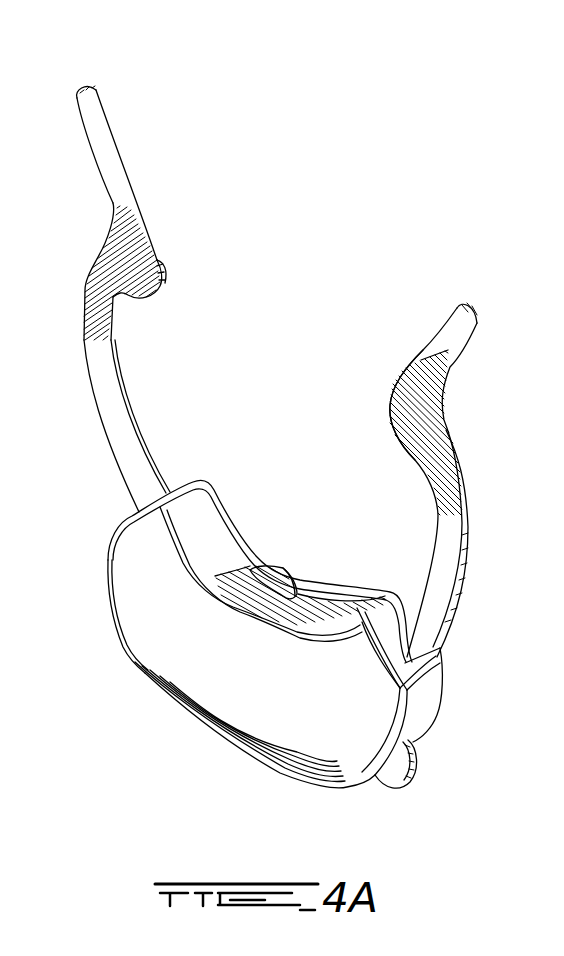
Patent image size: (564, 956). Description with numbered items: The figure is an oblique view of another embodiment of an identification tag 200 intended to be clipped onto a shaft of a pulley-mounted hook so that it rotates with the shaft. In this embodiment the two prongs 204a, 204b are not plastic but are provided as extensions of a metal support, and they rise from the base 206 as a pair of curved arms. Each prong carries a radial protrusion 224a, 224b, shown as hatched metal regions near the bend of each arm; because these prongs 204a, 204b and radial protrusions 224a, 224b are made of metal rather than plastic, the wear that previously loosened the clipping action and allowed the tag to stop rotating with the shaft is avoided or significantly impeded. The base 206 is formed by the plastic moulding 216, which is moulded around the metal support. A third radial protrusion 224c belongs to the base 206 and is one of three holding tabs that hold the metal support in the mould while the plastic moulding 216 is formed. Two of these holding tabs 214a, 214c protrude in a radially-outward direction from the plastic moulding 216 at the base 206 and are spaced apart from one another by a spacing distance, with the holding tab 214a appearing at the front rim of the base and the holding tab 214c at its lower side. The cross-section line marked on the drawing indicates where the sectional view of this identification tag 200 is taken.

The identification tag 200 is at (322, 211).
The prong 204a is at (103, 247).
The prong 204b is at (447, 427).
The radial protrusion 224a is at (163, 284).
The radial protrusion 224b is at (390, 406).
The radial protrusion 224c is at (280, 567).
The holding tab 214a is at (291, 574).
The holding tab 214c is at (408, 784).
The plastic moulding 216 is at (143, 655).
The base 206 is at (320, 762).